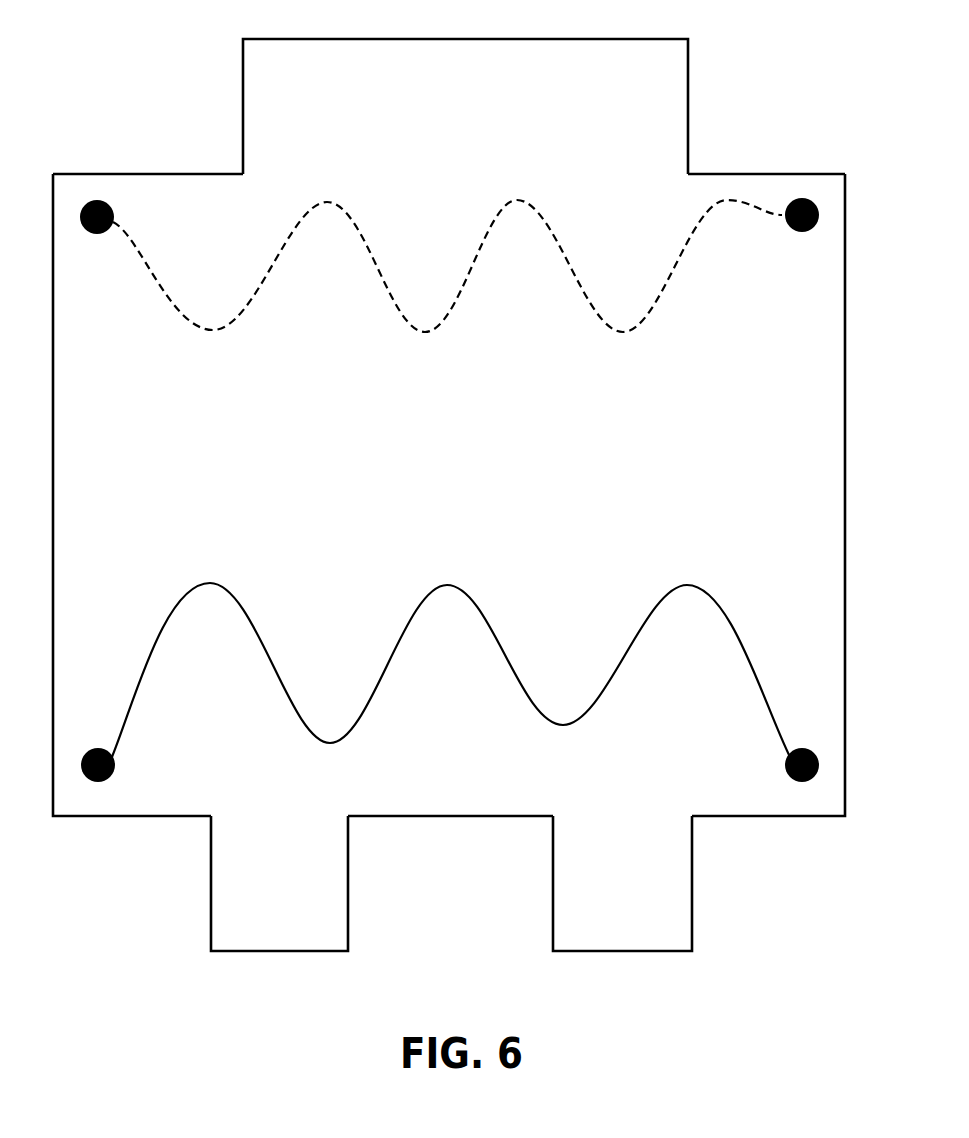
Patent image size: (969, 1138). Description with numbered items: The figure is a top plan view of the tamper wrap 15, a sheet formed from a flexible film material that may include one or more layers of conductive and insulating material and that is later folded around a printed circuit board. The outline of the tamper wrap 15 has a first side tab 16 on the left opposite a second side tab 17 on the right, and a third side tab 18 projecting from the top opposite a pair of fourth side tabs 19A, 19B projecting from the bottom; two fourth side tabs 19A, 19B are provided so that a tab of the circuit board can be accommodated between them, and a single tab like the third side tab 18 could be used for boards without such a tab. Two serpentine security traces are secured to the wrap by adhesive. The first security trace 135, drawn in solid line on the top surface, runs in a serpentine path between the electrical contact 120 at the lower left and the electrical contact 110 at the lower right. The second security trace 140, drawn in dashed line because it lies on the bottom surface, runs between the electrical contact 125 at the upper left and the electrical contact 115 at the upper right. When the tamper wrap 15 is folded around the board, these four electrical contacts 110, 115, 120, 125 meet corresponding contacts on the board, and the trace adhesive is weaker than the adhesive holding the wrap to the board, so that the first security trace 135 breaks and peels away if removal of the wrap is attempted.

The tamper wrap 15 is at (846, 240).
The first side tab 16 is at (143, 174).
The second side tab 17 is at (772, 174).
The third side tab 18 is at (690, 78).
The fourth side tab 19A is at (349, 908).
The fourth side tab 19B is at (693, 906).
The electrical contact 110 is at (812, 749).
The electrical contact 115 is at (803, 234).
The electrical contact 120 is at (84, 750).
The electrical contact 125 is at (113, 210).
The first security trace 135 is at (261, 644).
The second security trace 140 is at (397, 308).